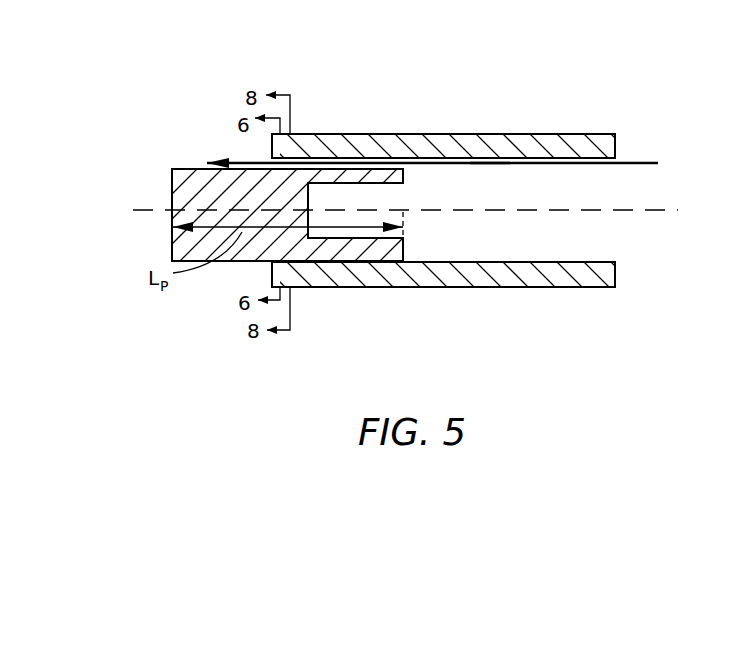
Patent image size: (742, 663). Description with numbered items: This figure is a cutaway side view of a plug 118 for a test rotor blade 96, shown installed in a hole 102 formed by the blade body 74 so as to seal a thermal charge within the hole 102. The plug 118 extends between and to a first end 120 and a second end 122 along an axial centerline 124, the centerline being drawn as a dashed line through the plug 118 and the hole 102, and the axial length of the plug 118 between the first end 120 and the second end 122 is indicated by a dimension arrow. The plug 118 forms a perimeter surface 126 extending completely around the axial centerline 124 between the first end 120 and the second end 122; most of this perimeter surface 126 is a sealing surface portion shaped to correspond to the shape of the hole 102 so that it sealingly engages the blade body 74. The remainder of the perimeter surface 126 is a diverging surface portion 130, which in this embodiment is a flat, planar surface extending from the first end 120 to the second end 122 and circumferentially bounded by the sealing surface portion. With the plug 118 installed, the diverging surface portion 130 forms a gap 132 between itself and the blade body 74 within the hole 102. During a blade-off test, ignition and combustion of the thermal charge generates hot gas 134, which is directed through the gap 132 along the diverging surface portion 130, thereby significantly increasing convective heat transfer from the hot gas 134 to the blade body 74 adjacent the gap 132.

The test rotor blade 96 is at (575, 47).
The blade body 74 is at (553, 147).
The hole 102 is at (489, 165).
The plug 118 is at (293, 262).
The first end 120 is at (172, 188).
The second end 122 is at (405, 248).
The axial centerline 124 is at (640, 210).
The perimeter surface 126 is at (367, 265).
The diverging surface portion 130 is at (351, 169).
The gap 132 is at (389, 140).
The hot gas 134 is at (645, 162).